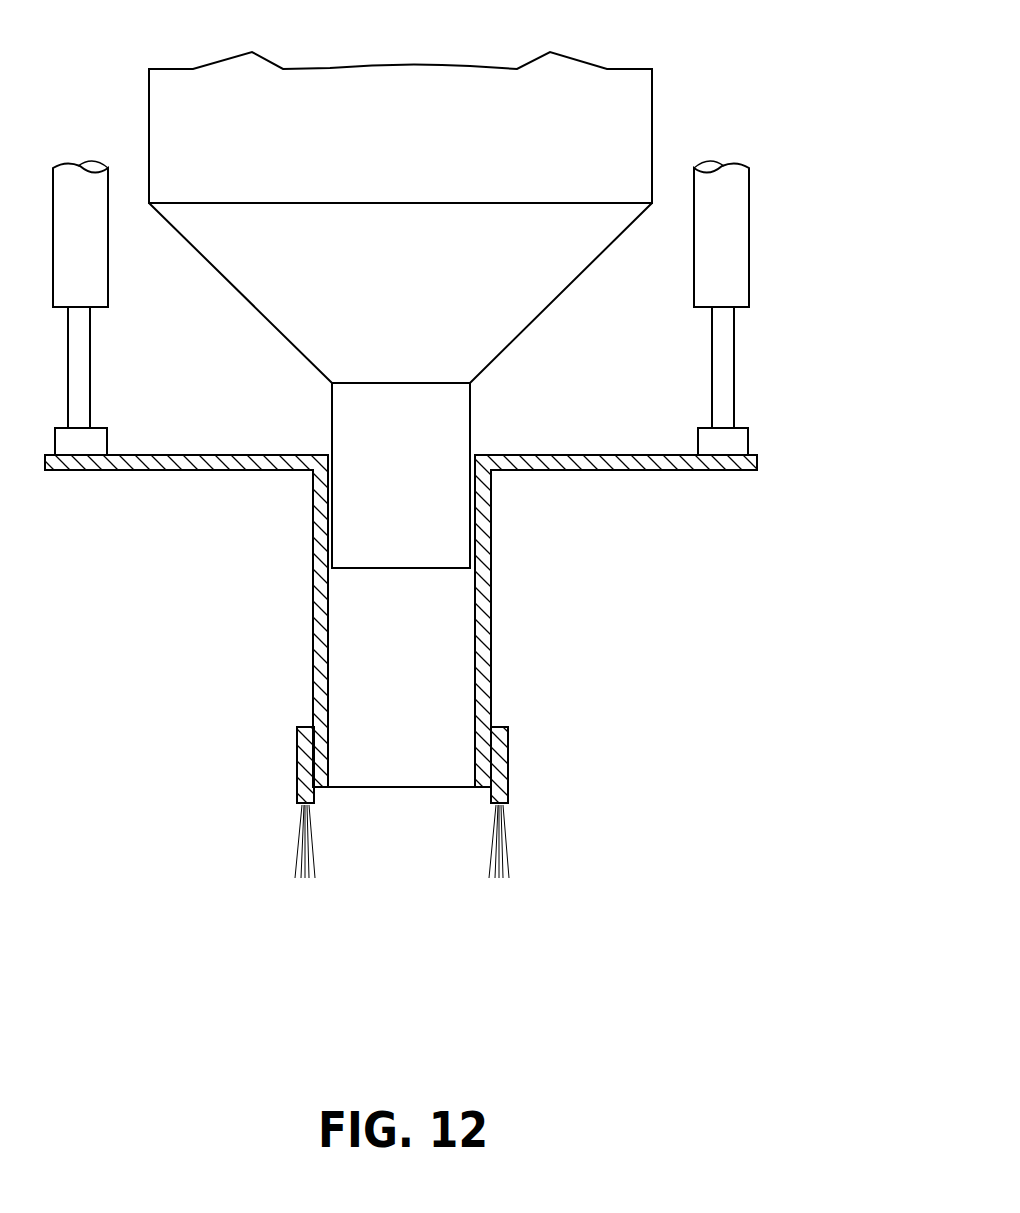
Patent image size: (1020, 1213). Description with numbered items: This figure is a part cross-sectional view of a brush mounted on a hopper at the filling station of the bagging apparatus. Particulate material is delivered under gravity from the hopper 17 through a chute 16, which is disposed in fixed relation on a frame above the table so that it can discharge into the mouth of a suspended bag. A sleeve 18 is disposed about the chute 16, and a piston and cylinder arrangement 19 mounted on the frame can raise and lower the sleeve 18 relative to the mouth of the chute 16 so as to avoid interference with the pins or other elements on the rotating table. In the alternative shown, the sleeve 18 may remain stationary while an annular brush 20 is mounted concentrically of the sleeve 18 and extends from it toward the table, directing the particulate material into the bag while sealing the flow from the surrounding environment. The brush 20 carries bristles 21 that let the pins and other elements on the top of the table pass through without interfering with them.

The chute 16 is at (462, 442).
The hopper 17 is at (637, 133).
The sleeve 18 is at (483, 648).
The piston and cylinder arrangement 19 is at (768, 327).
The annular brush 20 is at (502, 772).
The bristles 21 is at (508, 857).